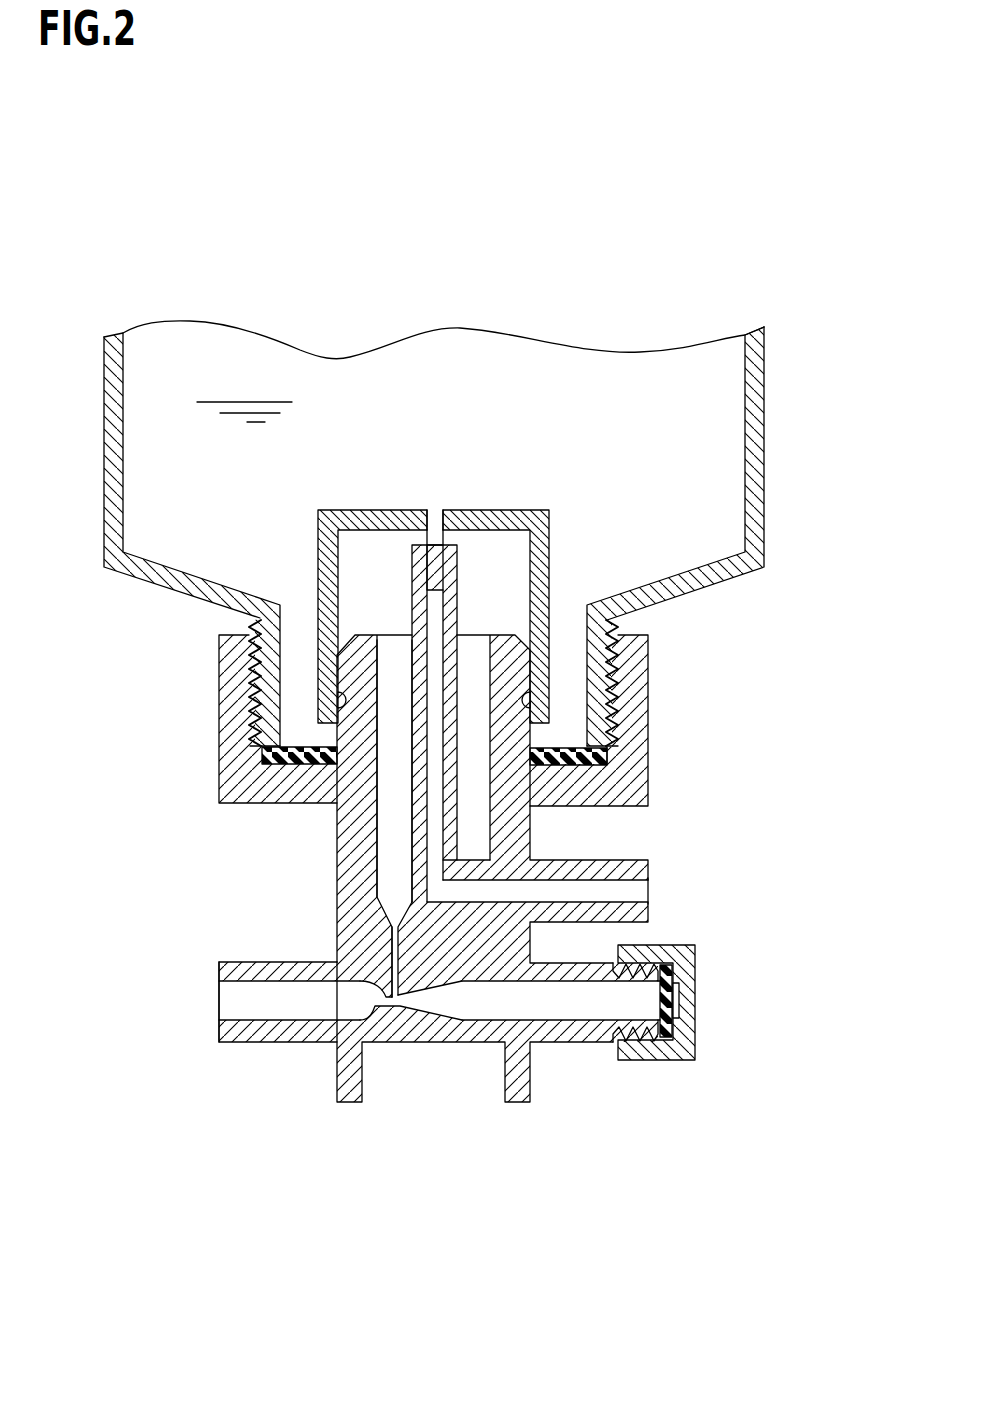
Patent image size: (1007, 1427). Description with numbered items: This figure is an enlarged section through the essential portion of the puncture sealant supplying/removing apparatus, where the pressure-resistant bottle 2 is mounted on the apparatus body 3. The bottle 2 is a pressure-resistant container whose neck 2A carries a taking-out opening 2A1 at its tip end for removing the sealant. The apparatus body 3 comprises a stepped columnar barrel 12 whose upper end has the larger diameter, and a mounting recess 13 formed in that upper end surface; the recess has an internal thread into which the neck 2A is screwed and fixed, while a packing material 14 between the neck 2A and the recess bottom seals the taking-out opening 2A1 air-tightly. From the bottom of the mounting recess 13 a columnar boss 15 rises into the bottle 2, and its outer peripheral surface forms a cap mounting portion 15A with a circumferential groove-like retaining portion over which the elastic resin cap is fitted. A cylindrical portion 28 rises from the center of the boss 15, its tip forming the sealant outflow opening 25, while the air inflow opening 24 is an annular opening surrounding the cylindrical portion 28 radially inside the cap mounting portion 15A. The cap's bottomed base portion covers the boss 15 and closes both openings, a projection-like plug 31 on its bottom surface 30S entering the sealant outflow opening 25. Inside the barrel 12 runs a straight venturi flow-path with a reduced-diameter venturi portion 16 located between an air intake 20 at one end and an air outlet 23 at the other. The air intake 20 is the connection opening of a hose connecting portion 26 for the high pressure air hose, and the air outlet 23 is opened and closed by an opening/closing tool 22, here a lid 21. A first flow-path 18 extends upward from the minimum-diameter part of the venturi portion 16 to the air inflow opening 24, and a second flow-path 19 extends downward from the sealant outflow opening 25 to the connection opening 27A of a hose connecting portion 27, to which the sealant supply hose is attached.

The pressure-resistant bottle 2 is at (117, 415).
The neck 2A is at (274, 734).
The taking-out opening 2A1 is at (291, 758).
The mounting recess 13 is at (268, 684).
The bottom surface of base portion 30S is at (397, 510).
The air inflow opening 24 is at (390, 633).
The sealant outflow opening 25 is at (433, 544).
The plug 31 is at (436, 570).
The cylindrical portion 28 is at (515, 653).
The boss 15 is at (458, 580).
The cap mounting portion 15A is at (533, 677).
The second flow-path 19 is at (590, 892).
The hose connecting portion 27 is at (624, 861).
The connection opening 27A is at (652, 890).
The packing material 14 is at (300, 723).
The columnar barrel 12 is at (337, 897).
The first flow-path 18 is at (387, 915).
The venturi portion 16 is at (396, 1015).
The air intake 20 is at (218, 1000).
The hose connecting portion 26 is at (247, 1043).
The apparatus body 3 is at (548, 1112).
The lid 21 is at (685, 1050).
The opening/closing tool 22 is at (700, 973).
The air outlet 23 is at (655, 1008).